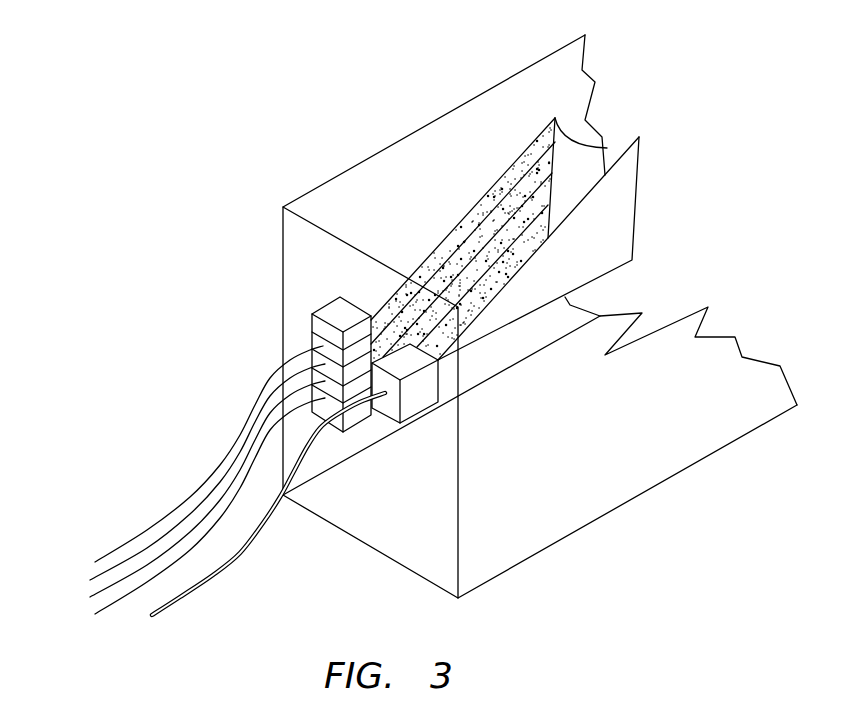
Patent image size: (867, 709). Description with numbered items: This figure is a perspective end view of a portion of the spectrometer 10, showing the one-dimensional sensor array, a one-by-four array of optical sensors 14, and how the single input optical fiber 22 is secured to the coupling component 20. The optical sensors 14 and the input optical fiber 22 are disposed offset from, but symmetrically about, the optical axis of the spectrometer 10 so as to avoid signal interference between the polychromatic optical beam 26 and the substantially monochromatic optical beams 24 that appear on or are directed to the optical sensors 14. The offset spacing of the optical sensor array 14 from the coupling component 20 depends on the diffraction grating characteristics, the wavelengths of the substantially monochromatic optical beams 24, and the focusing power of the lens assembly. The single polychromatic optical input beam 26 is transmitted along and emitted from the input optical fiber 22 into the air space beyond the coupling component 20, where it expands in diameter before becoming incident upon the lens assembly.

The spectrometer 10 is at (286, 80).
The optical sensors 14 is at (312, 325).
The coupling component 20 is at (417, 398).
The input optical fiber 22 is at (233, 567).
The substantially monochromatic optical beam 24 is at (517, 158).
The polychromatic optical input beam 26 is at (522, 297).